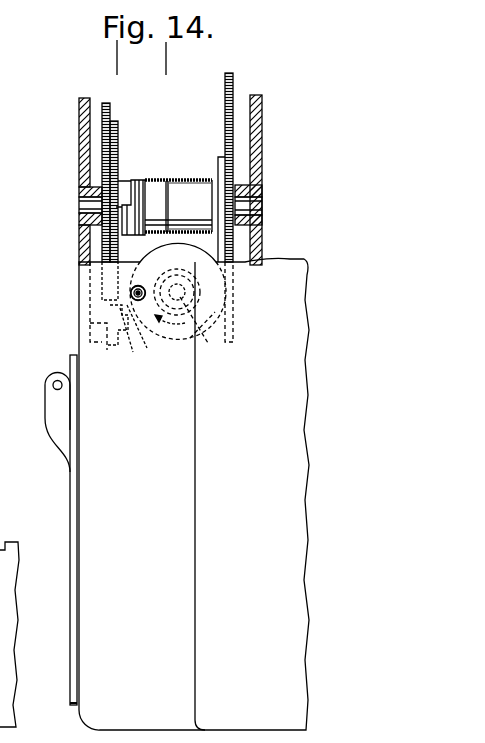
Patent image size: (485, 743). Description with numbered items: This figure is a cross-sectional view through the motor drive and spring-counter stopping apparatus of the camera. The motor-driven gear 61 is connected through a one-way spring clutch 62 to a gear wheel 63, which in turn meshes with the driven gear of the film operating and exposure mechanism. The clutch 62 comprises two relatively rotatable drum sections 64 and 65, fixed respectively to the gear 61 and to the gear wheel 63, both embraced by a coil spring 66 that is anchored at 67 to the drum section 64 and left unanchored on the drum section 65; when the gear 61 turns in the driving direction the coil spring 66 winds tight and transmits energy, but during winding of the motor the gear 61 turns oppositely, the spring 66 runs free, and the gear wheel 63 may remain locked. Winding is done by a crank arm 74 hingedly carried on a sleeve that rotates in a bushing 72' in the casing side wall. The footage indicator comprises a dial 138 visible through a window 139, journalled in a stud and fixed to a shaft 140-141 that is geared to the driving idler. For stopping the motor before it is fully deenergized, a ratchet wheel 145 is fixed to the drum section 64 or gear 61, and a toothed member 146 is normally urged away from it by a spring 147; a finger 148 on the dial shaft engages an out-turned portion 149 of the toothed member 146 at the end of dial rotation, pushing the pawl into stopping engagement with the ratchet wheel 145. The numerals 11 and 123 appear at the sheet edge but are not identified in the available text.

The gear 61 is at (105, 158).
The one-way spring clutch 62 is at (190, 180).
The gear wheel 63 is at (235, 85).
The drum section 64 is at (153, 204).
The drum section 65 is at (195, 202).
The coil spring 66 is at (136, 178).
The anchor 67 is at (78, 223).
The ratchet wheel 145 is at (120, 128).
The finger 148 is at (156, 247).
The window 139 is at (140, 286).
The dial 138 is at (142, 300).
The toothed member 146 is at (103, 352).
The spring 147 is at (108, 348).
The out-turned portion 149 is at (130, 332).
The stud and shaft 140-141 is at (208, 343).
The bushing 72' is at (48, 530).
The crank arm 74 is at (66, 452).
The frame 11 is at (119, 739).
The plate 123 is at (156, 739).